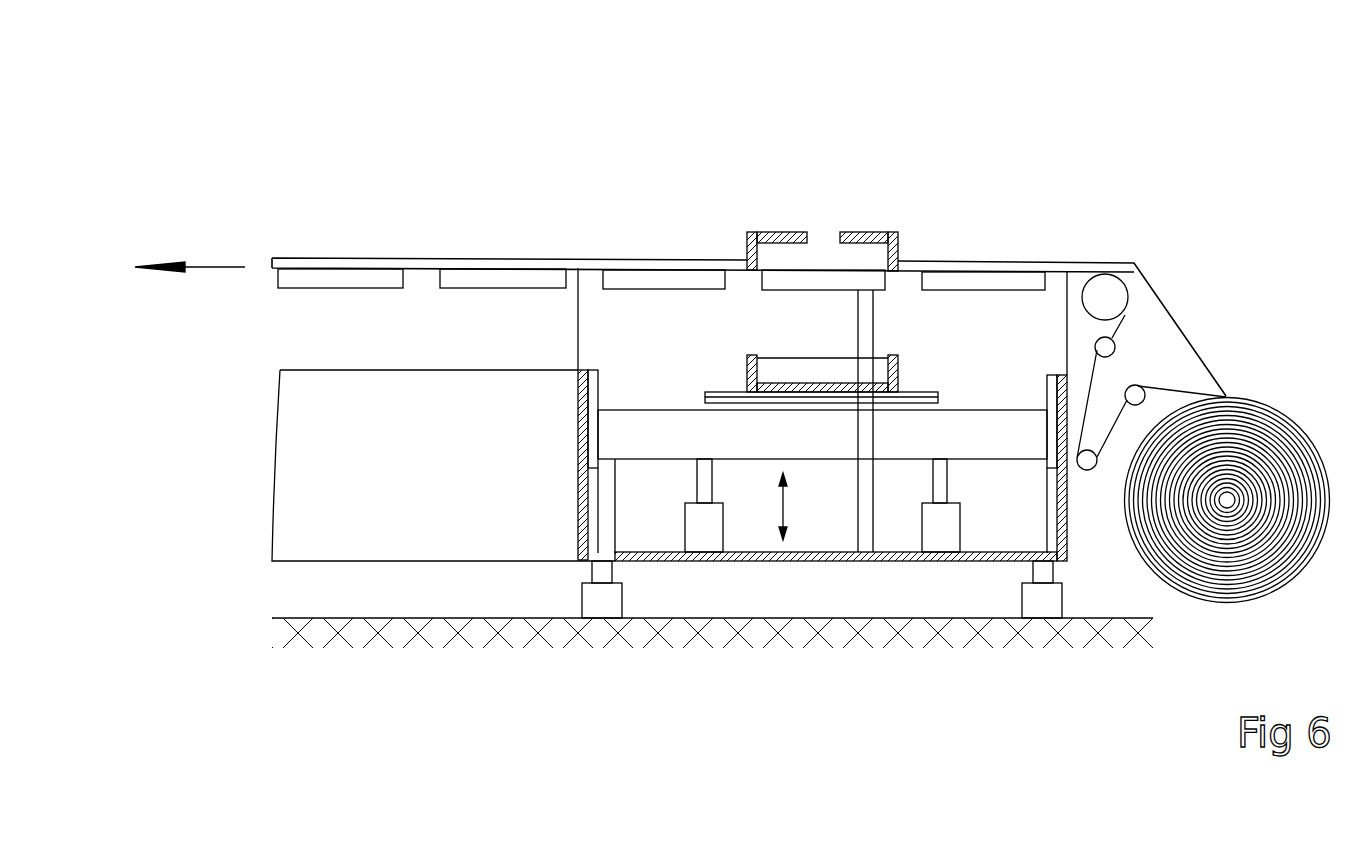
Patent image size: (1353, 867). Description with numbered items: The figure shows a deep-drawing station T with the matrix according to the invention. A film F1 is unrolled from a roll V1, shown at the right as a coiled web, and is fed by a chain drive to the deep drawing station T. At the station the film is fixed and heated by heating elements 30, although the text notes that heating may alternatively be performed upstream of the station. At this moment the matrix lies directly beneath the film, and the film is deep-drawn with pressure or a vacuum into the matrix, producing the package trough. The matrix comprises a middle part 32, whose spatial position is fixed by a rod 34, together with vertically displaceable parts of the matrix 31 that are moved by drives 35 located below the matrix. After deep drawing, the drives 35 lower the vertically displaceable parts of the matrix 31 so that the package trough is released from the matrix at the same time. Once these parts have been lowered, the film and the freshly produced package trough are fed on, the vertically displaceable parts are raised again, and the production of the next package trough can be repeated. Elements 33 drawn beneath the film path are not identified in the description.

The heating elements 30 is at (748, 232).
The vertically displaceable parts of the matrix 31 is at (747, 373).
The middle part 32 is at (790, 282).
The support blocks 33 is at (502, 280).
The rod 34 is at (867, 443).
The drives 35 is at (935, 533).
The deep drawing station T is at (912, 242).
The film F1 is at (1167, 387).
The roll V1 is at (1230, 583).